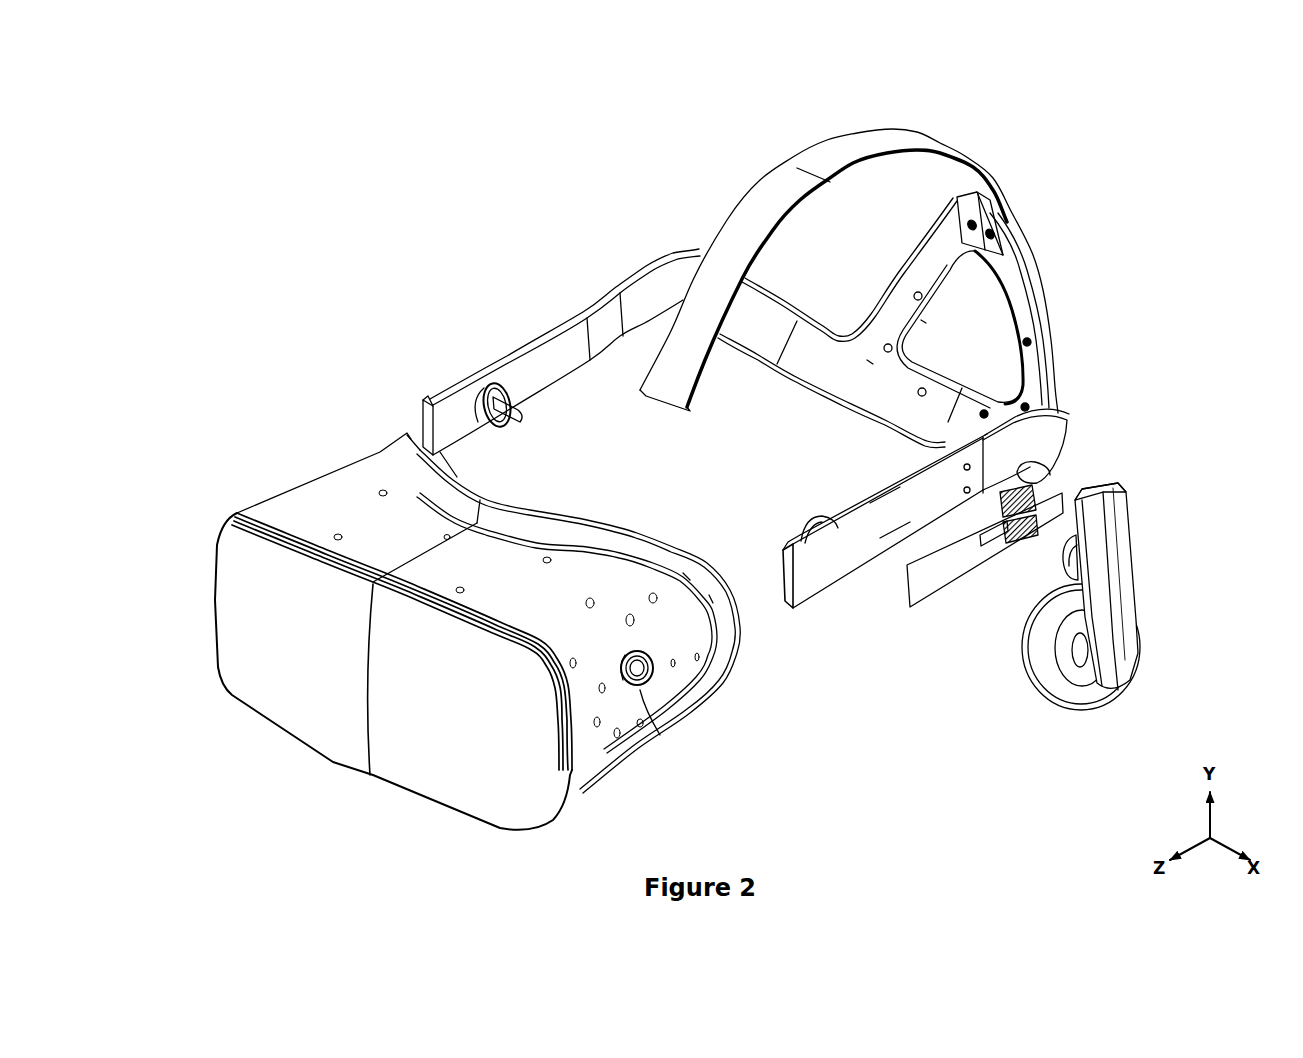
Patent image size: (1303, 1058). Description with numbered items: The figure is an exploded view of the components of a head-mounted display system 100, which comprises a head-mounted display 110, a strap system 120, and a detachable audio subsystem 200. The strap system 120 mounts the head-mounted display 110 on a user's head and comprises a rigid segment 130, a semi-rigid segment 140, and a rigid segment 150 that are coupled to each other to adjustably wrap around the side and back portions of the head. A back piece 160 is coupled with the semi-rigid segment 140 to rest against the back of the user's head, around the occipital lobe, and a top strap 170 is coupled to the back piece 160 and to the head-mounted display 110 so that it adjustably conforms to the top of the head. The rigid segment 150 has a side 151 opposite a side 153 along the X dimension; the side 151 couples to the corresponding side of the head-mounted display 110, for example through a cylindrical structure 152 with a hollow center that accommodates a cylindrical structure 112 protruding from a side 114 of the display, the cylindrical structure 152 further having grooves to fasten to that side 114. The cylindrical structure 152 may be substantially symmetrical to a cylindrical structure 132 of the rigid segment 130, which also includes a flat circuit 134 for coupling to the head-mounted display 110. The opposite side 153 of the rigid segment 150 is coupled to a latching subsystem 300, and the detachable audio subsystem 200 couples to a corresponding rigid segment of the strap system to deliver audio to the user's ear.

The head-mounted display system 100 is at (228, 162).
The head-mounted display 110 is at (343, 477).
The cylindrical structure 112 is at (640, 700).
The side 114 is at (675, 688).
The strap system 120 is at (1043, 140).
The rigid segment 130 is at (543, 337).
The cylindrical structure 132 is at (490, 393).
The flat circuit 134 is at (523, 418).
The semi-rigid segment 140 is at (787, 300).
The rigid segment 150 is at (835, 563).
The side 151 is at (877, 492).
The cylindrical structure 152 is at (813, 522).
The side 153 is at (937, 533).
The back piece 160 is at (1023, 277).
The top strap 170 is at (787, 177).
The detachable audio subsystem 200 is at (1110, 477).
The latching subsystem 300 is at (917, 617).